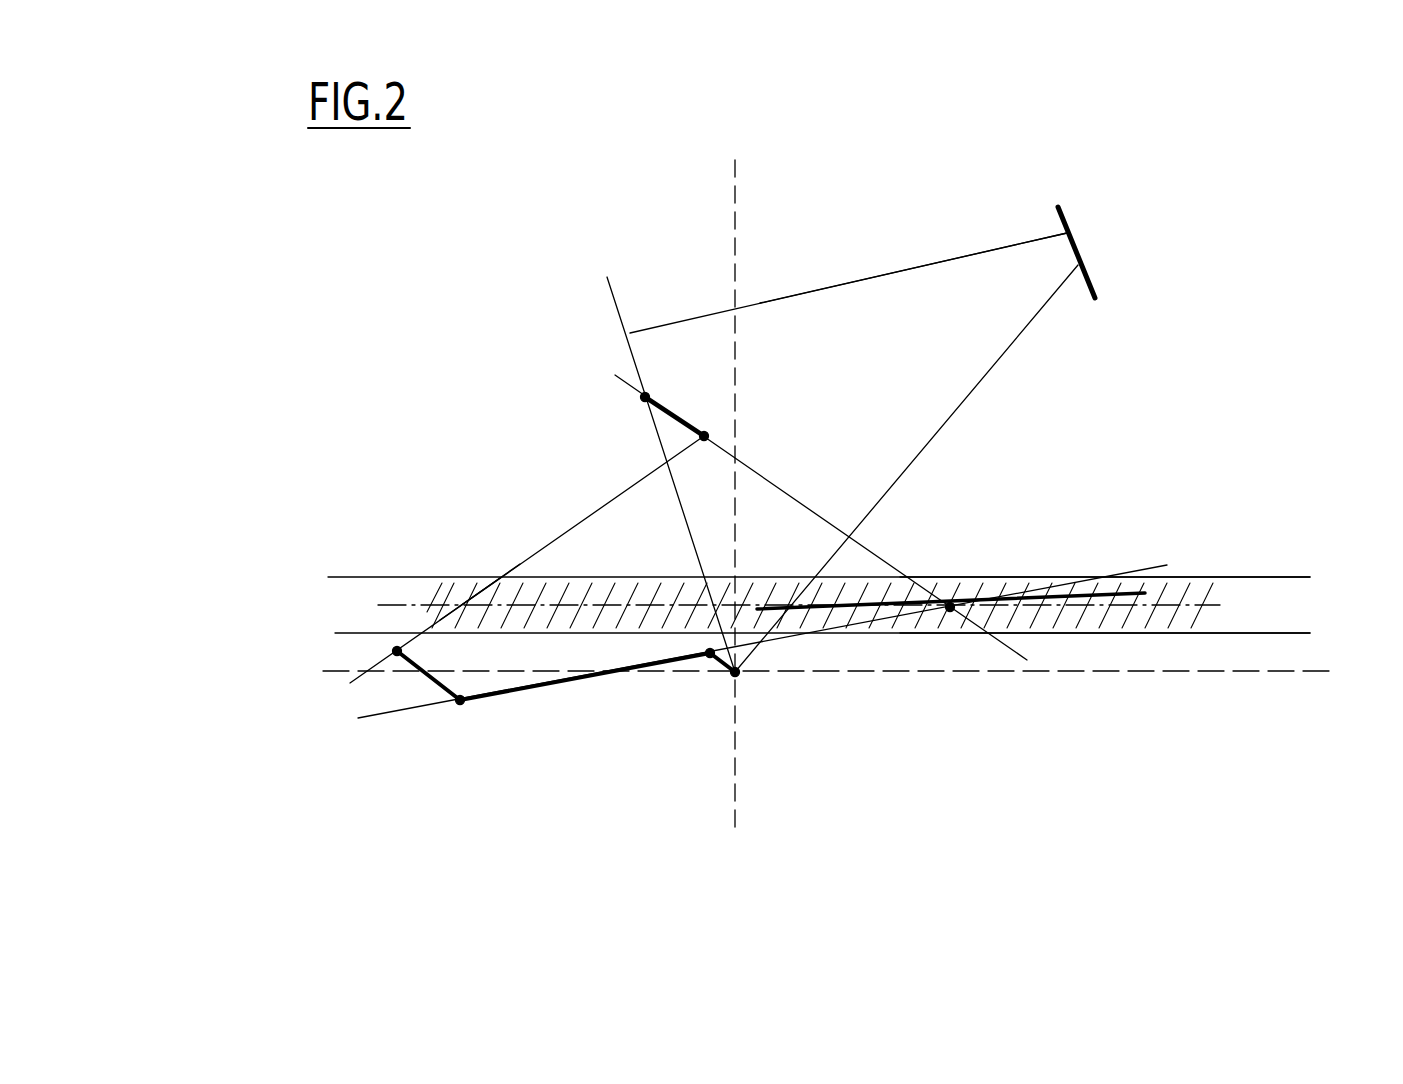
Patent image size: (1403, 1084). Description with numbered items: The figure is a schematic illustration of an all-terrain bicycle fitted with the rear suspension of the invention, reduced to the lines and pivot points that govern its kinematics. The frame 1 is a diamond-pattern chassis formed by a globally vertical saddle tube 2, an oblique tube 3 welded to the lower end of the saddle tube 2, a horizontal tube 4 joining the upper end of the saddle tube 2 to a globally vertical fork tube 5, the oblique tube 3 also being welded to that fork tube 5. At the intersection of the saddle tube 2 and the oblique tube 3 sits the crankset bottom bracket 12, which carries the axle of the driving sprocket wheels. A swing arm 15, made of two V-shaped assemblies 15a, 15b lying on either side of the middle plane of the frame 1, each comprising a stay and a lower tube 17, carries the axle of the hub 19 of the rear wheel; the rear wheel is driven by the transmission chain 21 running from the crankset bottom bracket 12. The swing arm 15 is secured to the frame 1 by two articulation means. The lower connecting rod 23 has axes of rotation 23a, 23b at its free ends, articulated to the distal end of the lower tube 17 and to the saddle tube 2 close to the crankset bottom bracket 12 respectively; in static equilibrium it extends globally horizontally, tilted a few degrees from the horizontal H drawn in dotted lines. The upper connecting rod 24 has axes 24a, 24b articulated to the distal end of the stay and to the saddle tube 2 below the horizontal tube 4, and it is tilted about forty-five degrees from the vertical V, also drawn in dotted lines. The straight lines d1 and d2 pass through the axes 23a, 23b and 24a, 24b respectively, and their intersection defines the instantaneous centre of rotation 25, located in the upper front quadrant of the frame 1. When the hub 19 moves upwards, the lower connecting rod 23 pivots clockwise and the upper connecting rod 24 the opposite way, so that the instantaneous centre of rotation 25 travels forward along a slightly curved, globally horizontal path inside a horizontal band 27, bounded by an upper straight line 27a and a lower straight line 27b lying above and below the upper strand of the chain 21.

The frame 1 is at (965, 250).
The saddle tube 2 is at (627, 350).
The oblique tube 3 is at (948, 420).
The horizontal tube 4 is at (872, 277).
The fork tube 5 is at (1082, 255).
The crankset bottom bracket 12 is at (740, 676).
The swing arm 15 is at (546, 540).
The V-shaped assembly 15a is at (476, 578).
The V-shaped assembly 15b is at (467, 529).
The lower tube 17 is at (430, 682).
The hub 19 is at (395, 650).
The transmission chain 21 is at (595, 603).
The lower connecting rod 23 is at (585, 677).
The axis of rotation 23a is at (463, 705).
The axis of rotation 23b is at (708, 658).
The upper connecting rod 24 is at (670, 415).
The axis of rotation 24a is at (708, 434).
The axis of rotation 24b is at (648, 396).
The instantaneous centre of rotation 25 is at (955, 600).
The horizontal band 27 is at (1137, 620).
The upper straight line 27a is at (1265, 577).
The lower straight line 27b is at (1215, 638).
The straight line d1 is at (375, 716).
The straight line d2 is at (615, 375).
The vertical V is at (735, 172).
The horizontal H is at (1325, 672).